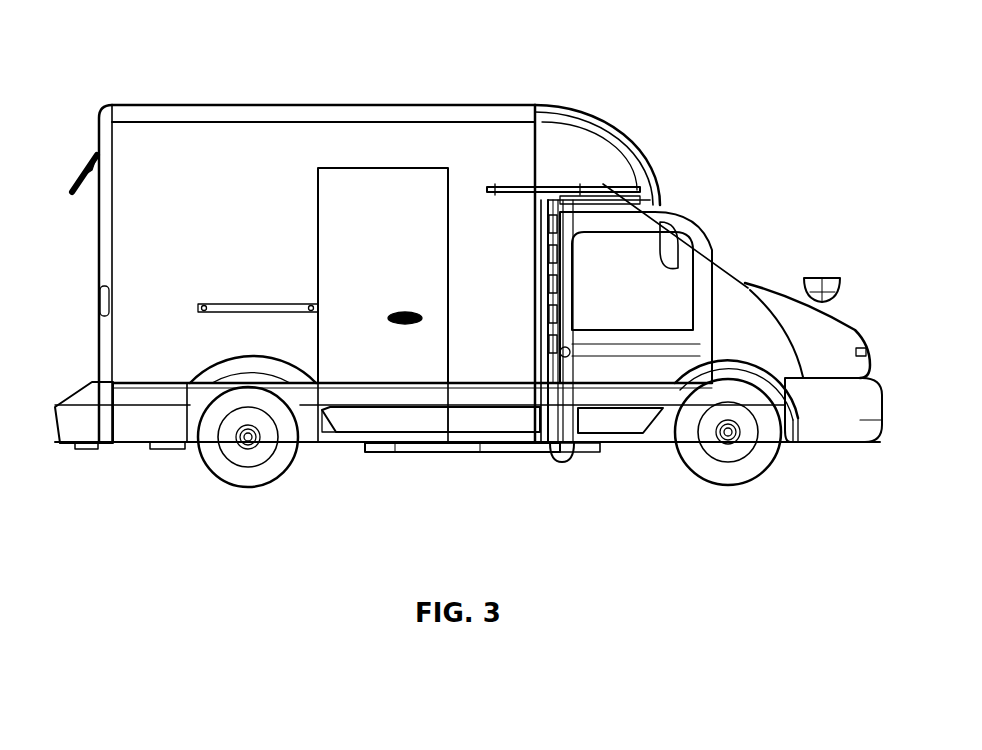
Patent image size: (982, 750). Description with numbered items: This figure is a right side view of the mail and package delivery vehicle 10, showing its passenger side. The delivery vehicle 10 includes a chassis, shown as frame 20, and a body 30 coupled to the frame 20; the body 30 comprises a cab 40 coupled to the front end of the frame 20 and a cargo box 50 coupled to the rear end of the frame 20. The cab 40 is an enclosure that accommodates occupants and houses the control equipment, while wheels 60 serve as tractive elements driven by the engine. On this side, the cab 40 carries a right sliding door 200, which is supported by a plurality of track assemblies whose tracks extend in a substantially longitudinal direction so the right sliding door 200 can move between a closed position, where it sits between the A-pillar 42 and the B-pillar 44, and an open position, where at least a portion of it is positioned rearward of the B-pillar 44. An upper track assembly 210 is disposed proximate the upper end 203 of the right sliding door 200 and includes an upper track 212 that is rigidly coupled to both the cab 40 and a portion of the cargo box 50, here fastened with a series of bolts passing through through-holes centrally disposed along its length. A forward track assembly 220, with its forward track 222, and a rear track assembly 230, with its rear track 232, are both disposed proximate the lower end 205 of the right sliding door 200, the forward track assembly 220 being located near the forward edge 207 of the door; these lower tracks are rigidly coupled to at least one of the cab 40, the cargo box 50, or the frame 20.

The delivery vehicle 10 is at (257, 42).
The frame 20 is at (183, 452).
The body 30 is at (641, 153).
The cab 40 is at (753, 283).
The A-pillar 42 is at (740, 292).
The B-pillar 44 is at (535, 238).
The cargo box 50 is at (276, 152).
The wheels 60 is at (287, 452).
The right sliding door 200 is at (608, 446).
The upper end 203 is at (598, 192).
The lower end 205 is at (620, 462).
The forward edge 207 is at (682, 427).
The upper track assembly 210 is at (555, 192).
The upper track 212 is at (532, 188).
The forward track assembly 220 is at (582, 456).
The forward track 222 is at (482, 452).
The rear track assembly 230 is at (553, 459).
The rear track 232 is at (394, 452).